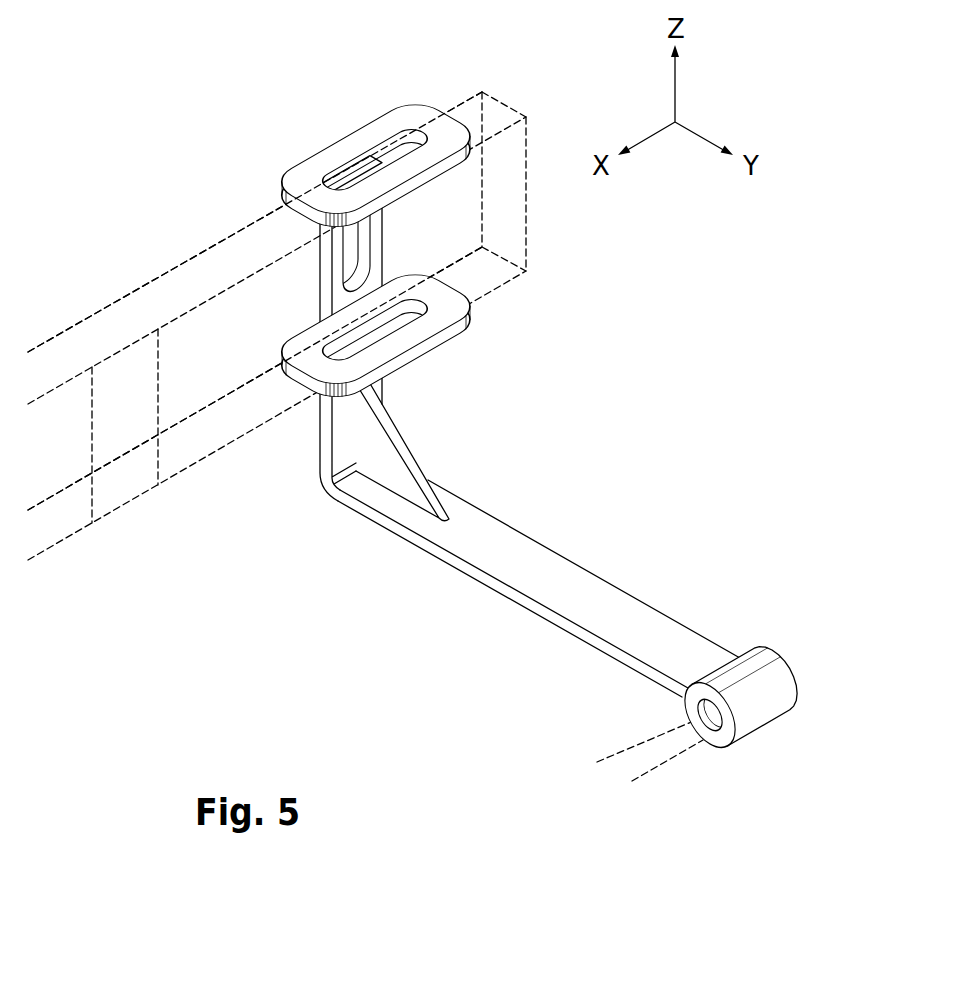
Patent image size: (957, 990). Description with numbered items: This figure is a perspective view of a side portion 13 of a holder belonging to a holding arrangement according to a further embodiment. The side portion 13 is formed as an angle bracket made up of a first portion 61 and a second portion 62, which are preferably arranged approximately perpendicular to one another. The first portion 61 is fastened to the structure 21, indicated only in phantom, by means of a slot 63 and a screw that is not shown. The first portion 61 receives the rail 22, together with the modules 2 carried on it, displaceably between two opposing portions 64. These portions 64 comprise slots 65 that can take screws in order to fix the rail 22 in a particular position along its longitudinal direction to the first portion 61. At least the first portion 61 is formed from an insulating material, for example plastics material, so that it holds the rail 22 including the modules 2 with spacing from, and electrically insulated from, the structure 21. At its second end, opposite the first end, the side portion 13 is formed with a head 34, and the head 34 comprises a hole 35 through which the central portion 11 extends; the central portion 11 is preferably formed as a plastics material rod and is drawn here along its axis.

The module 2 is at (125, 488).
The central portion 11 is at (623, 750).
The side portion 13 is at (493, 425).
The structure 21 is at (277, 317).
The rail 22 is at (111, 324).
The head 34 is at (727, 701).
The hole 35 is at (704, 722).
The first portion 61 is at (348, 332).
The second portion 62 is at (555, 569).
The slot 63 is at (352, 240).
The opposing portions 64 is at (393, 218).
The slot 65 is at (369, 153).